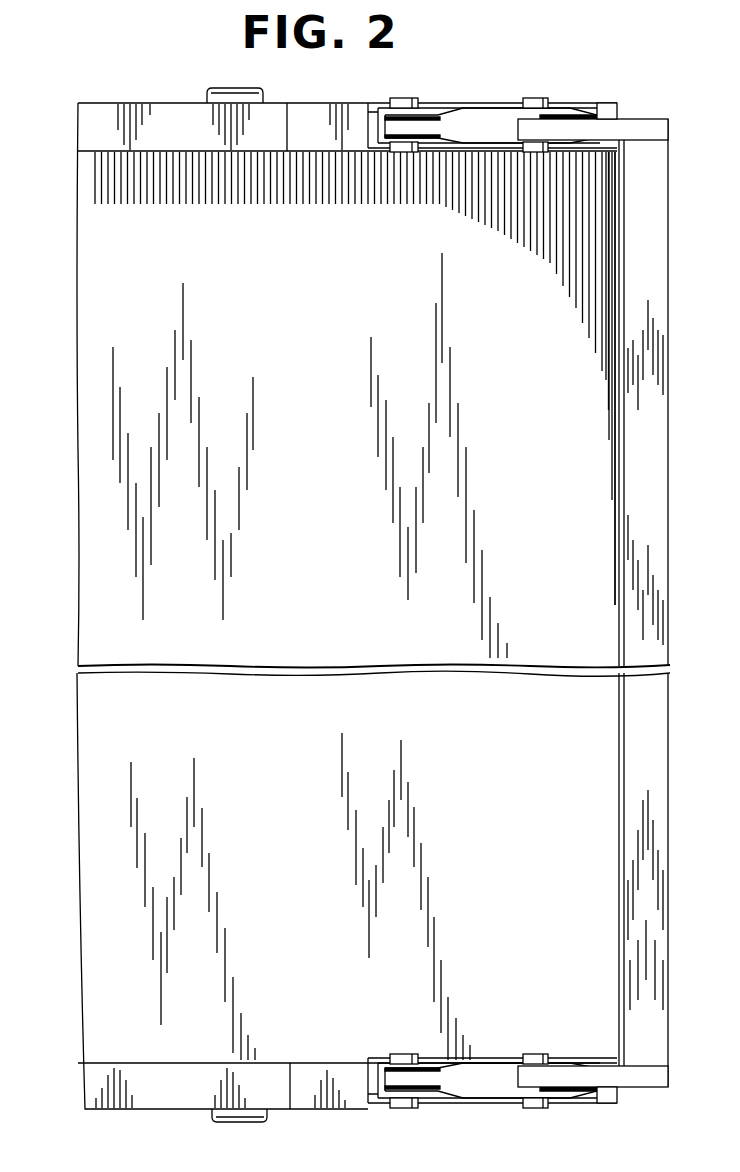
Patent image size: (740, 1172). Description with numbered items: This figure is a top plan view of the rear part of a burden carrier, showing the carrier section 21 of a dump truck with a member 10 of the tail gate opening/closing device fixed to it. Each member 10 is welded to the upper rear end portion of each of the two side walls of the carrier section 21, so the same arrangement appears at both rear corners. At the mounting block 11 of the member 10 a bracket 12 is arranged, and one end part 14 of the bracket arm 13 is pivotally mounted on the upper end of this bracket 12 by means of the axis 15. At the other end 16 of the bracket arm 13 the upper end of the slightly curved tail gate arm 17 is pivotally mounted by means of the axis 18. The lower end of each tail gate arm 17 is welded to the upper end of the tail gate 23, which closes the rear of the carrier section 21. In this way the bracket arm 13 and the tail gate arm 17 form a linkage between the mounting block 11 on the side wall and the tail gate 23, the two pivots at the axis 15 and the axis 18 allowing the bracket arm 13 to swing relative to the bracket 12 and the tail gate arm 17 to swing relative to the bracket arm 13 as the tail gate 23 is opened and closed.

The member of the tail gate opening/closing device 10 is at (463, 100).
The mounting block 11 is at (488, 109).
The bracket 12 is at (381, 104).
The bracket arm 13 is at (500, 122).
The one end part of the bracket arm 14 is at (421, 122).
The axis 15 is at (402, 99).
The other end of the bracket arm 16 is at (558, 116).
The tail gate arm 17 is at (643, 130).
The axis 18 is at (541, 104).
The carrier section 21 is at (90, 552).
The tail gate 23 is at (655, 378).